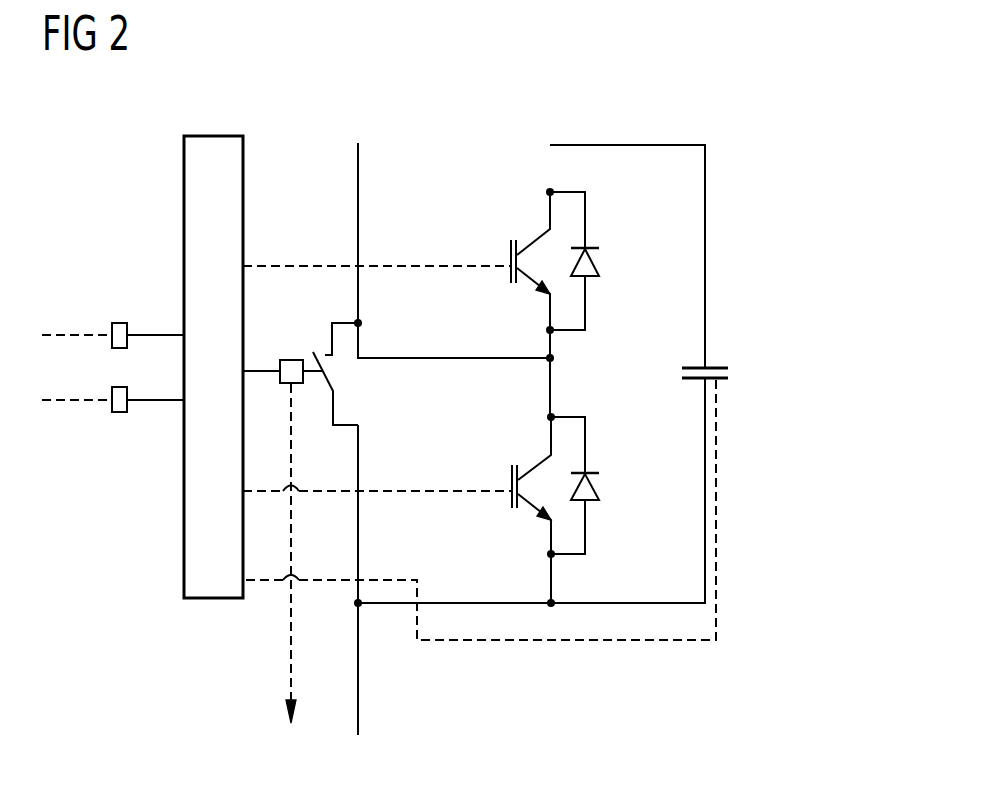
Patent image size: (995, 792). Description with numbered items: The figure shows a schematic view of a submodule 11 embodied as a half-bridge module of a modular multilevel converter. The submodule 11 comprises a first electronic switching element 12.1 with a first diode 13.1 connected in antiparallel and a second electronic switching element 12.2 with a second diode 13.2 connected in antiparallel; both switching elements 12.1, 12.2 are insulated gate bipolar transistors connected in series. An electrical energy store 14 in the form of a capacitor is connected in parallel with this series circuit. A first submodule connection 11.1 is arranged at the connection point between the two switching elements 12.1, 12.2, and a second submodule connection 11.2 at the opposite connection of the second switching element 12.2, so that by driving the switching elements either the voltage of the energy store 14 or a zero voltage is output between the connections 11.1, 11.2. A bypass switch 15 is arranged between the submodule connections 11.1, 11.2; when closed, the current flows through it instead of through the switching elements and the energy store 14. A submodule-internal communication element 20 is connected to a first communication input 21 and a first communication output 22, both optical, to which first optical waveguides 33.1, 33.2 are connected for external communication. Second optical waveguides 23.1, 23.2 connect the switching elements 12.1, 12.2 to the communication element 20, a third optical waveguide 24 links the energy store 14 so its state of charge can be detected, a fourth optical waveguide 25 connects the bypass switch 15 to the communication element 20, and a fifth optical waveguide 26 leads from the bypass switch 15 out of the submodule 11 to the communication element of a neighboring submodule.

The submodule 11 is at (663, 116).
The first submodule connection 11.1 is at (357, 164).
The second submodule connection 11.2 is at (360, 707).
The first electronic switching element 12.1 is at (510, 253).
The second electronic switching element 12.2 is at (510, 480).
The first diode 13.1 is at (620, 240).
The second diode 13.2 is at (620, 464).
The electrical energy store 14 is at (681, 373).
The bypass switch 15 is at (292, 358).
The communication element 20 is at (214, 133).
The first communication input 21 is at (120, 322).
The first communication output 22 is at (120, 413).
The second optical waveguide 23.1 is at (311, 263).
The second optical waveguide 23.2 is at (404, 489).
The third optical waveguide 24 is at (717, 522).
The fourth optical waveguide 25 is at (258, 374).
The fifth optical waveguide 26 is at (289, 671).
The first optical waveguide 33.1 is at (80, 402).
The first optical waveguide 33.2 is at (80, 333).